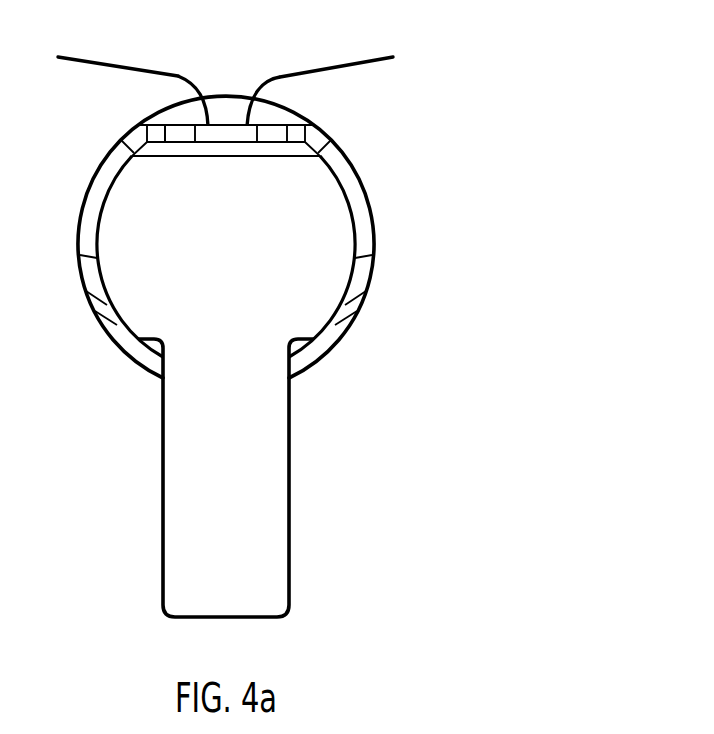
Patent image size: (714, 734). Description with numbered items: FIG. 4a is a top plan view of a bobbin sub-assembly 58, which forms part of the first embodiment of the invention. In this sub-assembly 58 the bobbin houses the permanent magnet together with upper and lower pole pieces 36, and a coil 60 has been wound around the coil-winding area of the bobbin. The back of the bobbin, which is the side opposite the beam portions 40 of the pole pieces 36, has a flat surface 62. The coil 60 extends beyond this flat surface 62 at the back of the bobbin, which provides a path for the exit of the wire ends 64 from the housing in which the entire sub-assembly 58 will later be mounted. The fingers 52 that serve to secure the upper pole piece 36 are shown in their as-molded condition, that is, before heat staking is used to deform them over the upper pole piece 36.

The pole piece 36 is at (230, 367).
The beam portion 40 is at (160, 496).
The finger 52 is at (223, 122).
The bobbin sub-assembly 58 is at (431, 162).
The coil 60 is at (213, 105).
The flat surface 62 is at (167, 122).
The wire end 64 is at (80, 60).